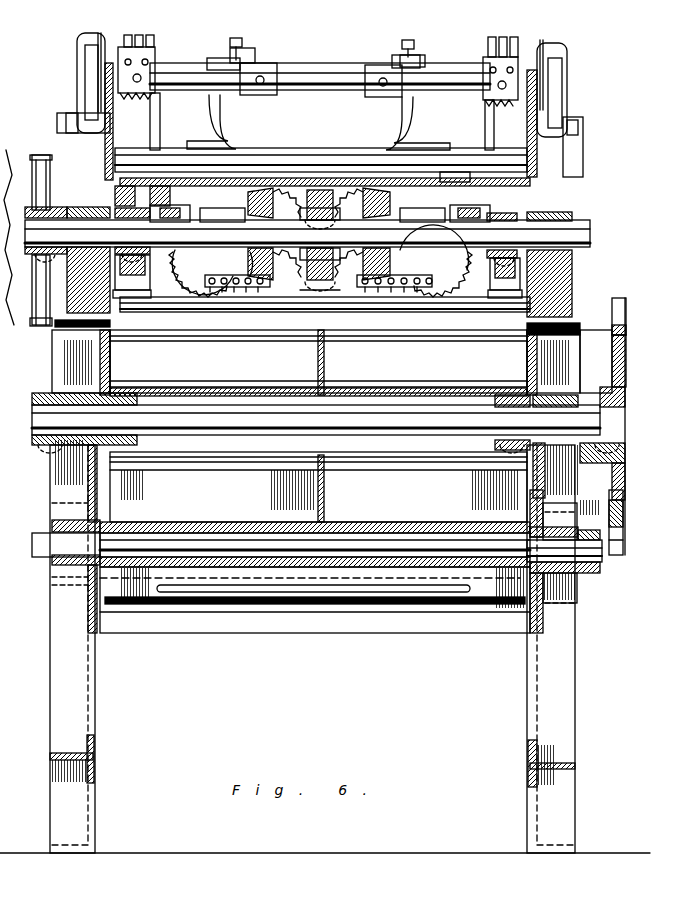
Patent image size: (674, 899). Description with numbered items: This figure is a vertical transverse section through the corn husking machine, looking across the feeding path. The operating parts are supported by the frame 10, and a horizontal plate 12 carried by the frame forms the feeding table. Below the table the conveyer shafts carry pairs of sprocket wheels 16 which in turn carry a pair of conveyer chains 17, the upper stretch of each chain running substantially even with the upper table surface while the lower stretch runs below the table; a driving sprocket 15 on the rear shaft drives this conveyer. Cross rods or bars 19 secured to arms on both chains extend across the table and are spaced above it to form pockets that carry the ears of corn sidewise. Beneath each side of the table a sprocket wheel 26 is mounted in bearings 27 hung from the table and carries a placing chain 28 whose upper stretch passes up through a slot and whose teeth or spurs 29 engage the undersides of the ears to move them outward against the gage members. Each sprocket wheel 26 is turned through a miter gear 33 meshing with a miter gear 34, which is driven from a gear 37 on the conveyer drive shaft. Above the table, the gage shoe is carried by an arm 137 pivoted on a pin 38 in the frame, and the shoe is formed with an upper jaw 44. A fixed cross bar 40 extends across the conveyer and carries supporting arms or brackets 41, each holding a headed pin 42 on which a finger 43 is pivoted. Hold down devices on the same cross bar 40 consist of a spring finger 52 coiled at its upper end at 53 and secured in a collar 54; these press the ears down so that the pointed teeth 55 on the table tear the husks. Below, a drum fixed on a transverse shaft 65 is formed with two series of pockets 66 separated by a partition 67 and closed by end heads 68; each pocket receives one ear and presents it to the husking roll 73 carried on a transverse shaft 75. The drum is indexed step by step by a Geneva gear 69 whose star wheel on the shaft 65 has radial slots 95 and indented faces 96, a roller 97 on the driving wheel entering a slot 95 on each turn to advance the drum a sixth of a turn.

The frame 10 is at (312, 649).
The horizontal plate 12 is at (462, 180).
The driving sprocket 15 is at (38, 155).
The sprocket wheels 16 is at (125, 292).
The conveyer chains 17 is at (591, 233).
The cross rods or bars 19 is at (522, 160).
The sprocket wheel 26 is at (320, 261).
The bearings 27 is at (205, 212).
The placing chain 28 is at (233, 288).
The teeth or spurs 29 is at (260, 180).
The miter gear 33 is at (348, 182).
The miter gear 34 is at (388, 200).
The gear 37 is at (325, 290).
The pin 38 is at (578, 130).
The fixed cross bar 40 is at (322, 65).
The supporting arms or brackets 41 is at (272, 63).
The headed pin 42 is at (213, 95).
The finger 43 is at (232, 132).
The upper jaw 44 is at (156, 50).
The spring finger 52 is at (161, 129).
The coil 53 is at (98, 42).
The collar 54 is at (136, 94).
The pointed teeth 55 is at (186, 183).
The transverse shaft 65 is at (34, 412).
The pockets 66 is at (318, 361).
The partition 67 is at (318, 363).
The end heads 68 is at (112, 358).
The Geneva gear 69 is at (618, 290).
The husking roll 73 is at (390, 523).
The transverse shaft 75 is at (193, 537).
The radial slots 95 is at (627, 313).
The indented faces 96 is at (612, 556).
The roller 97 is at (613, 357).
The arm 137 is at (84, 77).